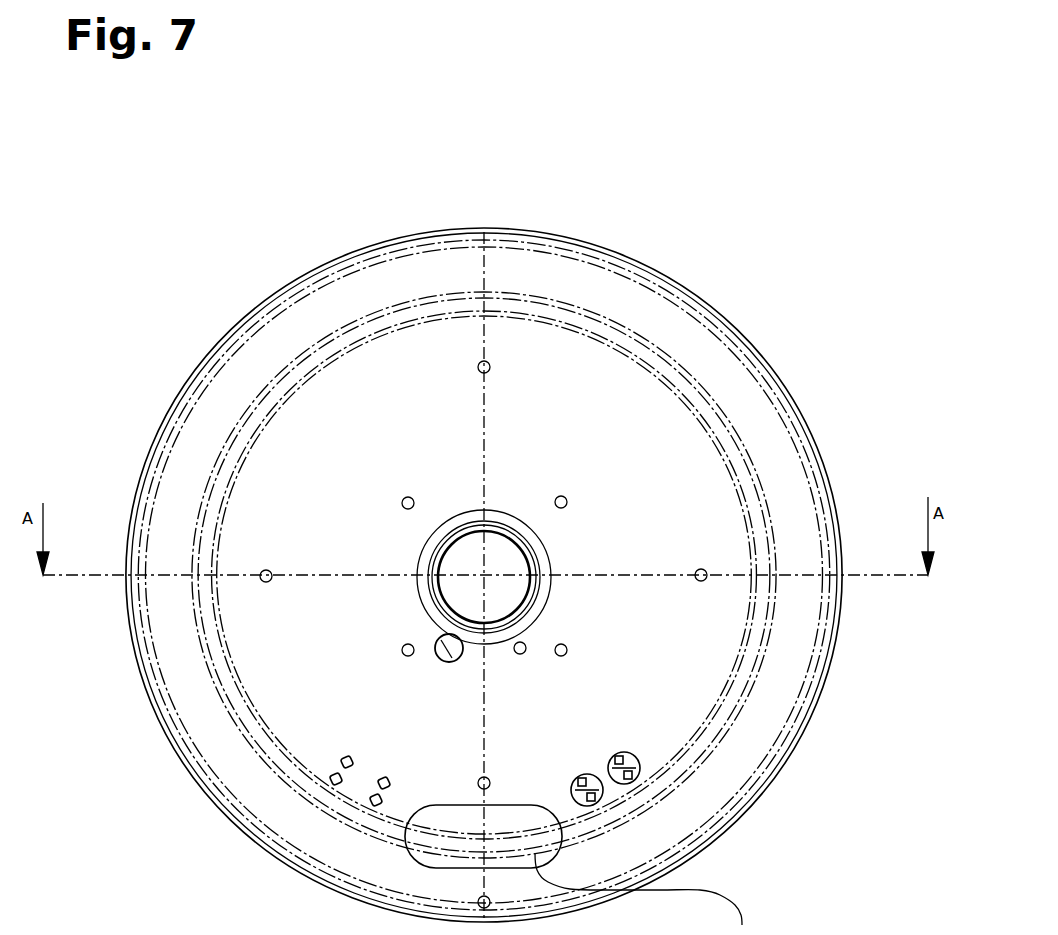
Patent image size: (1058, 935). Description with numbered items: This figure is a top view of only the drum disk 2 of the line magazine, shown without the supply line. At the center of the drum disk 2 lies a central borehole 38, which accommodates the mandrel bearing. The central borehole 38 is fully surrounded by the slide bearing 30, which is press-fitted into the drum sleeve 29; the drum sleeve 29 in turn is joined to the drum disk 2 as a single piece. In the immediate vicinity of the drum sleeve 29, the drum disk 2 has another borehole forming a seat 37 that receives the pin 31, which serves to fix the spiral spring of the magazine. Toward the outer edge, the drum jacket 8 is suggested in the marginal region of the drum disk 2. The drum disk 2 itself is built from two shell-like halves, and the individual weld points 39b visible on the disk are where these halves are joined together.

The drum disk 2 is at (327, 474).
The drum jacket 8 is at (840, 576).
The drum sleeve 29 is at (442, 540).
The slide bearing 30 is at (472, 537).
The pin 31 is at (265, 713).
The seat 37 is at (460, 655).
The central borehole 38 is at (500, 589).
The weld points 39b is at (266, 570).